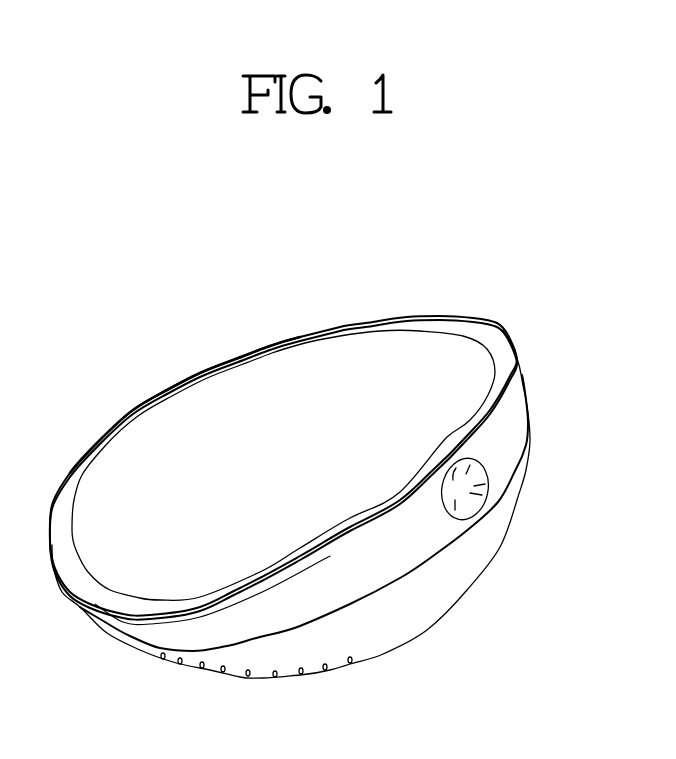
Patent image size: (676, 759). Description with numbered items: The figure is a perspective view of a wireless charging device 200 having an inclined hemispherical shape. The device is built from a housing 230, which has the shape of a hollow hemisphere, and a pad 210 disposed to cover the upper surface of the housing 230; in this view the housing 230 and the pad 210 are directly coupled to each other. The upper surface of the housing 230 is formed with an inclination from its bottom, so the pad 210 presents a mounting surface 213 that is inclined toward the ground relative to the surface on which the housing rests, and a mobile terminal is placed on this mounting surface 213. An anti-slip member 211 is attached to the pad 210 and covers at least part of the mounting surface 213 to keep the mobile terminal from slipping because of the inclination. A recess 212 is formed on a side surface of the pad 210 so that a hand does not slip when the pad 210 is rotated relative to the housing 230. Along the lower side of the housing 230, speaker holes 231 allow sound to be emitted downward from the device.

The wireless charging device 200 is at (108, 317).
The pad 210 is at (126, 462).
The anti-slip member 211 is at (136, 402).
The recess 212 is at (470, 505).
The mounting surface 213 is at (260, 376).
The housing 230 is at (449, 641).
The speaker holes 231 is at (327, 666).